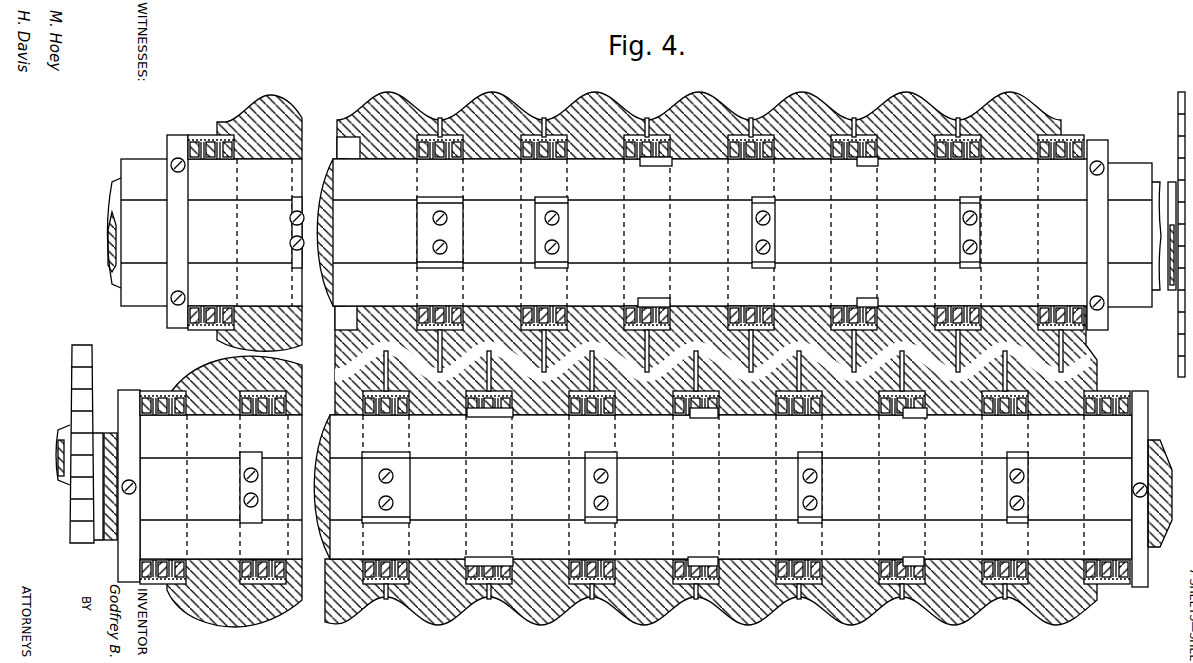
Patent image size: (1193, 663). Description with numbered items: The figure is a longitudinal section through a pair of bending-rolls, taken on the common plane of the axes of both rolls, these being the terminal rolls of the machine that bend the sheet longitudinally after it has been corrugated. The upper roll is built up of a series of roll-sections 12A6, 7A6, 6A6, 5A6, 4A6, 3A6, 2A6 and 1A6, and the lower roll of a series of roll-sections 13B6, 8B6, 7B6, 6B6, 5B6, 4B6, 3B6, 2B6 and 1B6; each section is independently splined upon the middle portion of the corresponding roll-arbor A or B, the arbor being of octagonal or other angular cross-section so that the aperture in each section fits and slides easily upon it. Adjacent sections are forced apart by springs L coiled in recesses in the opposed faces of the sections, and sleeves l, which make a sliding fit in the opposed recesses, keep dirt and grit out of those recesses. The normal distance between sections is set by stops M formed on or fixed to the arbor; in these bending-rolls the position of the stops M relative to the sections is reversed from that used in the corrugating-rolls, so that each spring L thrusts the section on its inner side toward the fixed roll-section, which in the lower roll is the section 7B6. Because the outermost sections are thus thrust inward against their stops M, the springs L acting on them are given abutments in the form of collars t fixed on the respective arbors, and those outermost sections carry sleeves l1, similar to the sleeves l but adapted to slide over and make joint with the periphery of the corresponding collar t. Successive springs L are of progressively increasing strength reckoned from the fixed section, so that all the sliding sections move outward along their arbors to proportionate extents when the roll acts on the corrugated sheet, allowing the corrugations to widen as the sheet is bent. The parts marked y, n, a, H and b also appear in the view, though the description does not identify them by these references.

The roll-arbor A is at (630, 233).
The roll-arbor B is at (644, 487).
The collar t is at (168, 222).
The sleeve l1 is at (200, 137).
The sleeve l is at (437, 156).
The spring L is at (755, 158).
The stop M is at (425, 233).
The curved bearing surface y is at (272, 94).
The slot n is at (723, 359).
The hub a is at (1164, 181).
The frame bar H is at (1178, 338).
The gear hub b is at (106, 438).
The roll-section 12A6 is at (259, 115).
The roll-section 7A6 is at (388, 115).
The roll-section 6A6 is at (492, 115).
The roll-section 5A6 is at (595, 115).
The roll-section 4A6 is at (699, 115).
The roll-section 3A6 is at (802, 115).
The roll-section 2A6 is at (906, 115).
The roll-section 1A6 is at (1009, 115).
The roll-section 13B6 is at (234, 605).
The roll-section 8B6 is at (355, 605).
The fixed roll-section 7B6 is at (437, 605).
The roll-section 6B6 is at (540, 605).
The roll-section 5B6 is at (644, 605).
The roll-section 4B6 is at (747, 605).
The roll-section 3B6 is at (850, 605).
The roll-section 2B6 is at (953, 605).
The roll-section 1B6 is at (1051, 605).